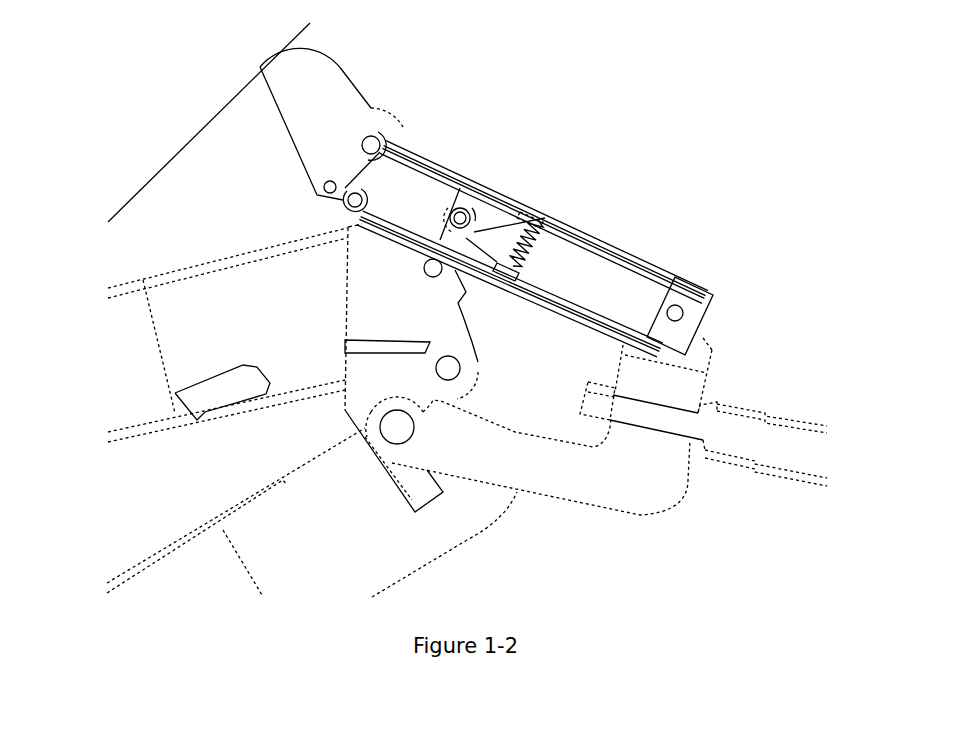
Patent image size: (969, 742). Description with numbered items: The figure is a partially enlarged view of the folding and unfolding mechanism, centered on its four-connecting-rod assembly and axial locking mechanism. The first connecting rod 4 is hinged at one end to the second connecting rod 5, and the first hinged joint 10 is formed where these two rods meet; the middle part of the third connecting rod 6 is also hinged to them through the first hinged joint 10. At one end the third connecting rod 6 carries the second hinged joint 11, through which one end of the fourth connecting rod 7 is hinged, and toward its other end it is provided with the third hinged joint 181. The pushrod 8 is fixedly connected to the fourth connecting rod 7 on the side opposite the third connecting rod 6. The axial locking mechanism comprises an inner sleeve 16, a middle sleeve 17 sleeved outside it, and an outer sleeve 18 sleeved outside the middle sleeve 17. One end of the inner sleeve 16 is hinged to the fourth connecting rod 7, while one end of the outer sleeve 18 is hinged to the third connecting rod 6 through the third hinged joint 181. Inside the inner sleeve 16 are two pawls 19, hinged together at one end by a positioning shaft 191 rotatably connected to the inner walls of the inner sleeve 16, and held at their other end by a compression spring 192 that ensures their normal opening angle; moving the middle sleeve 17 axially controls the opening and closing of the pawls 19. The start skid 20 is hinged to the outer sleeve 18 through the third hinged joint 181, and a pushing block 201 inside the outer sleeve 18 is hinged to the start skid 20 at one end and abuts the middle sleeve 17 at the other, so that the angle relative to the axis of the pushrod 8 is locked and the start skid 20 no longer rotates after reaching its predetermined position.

The first connecting rod 4 is at (180, 362).
The second connecting rod 5 is at (263, 532).
The third connecting rod 6 is at (375, 302).
The fourth connecting rod 7 is at (623, 480).
The pushrod 8 is at (762, 450).
The first hinged joint 10 is at (450, 380).
The second hinged joint 11 is at (400, 432).
The inner sleeve 16 is at (650, 337).
The middle sleeve 17 is at (640, 258).
The outer sleeve 18 is at (367, 222).
The pawl 19 is at (533, 210).
The start skid 20 is at (312, 117).
The third hinged joint 181 is at (388, 130).
The positioning shaft 191 is at (462, 217).
The compression spring 192 is at (523, 260).
The pushing block 201 is at (348, 200).